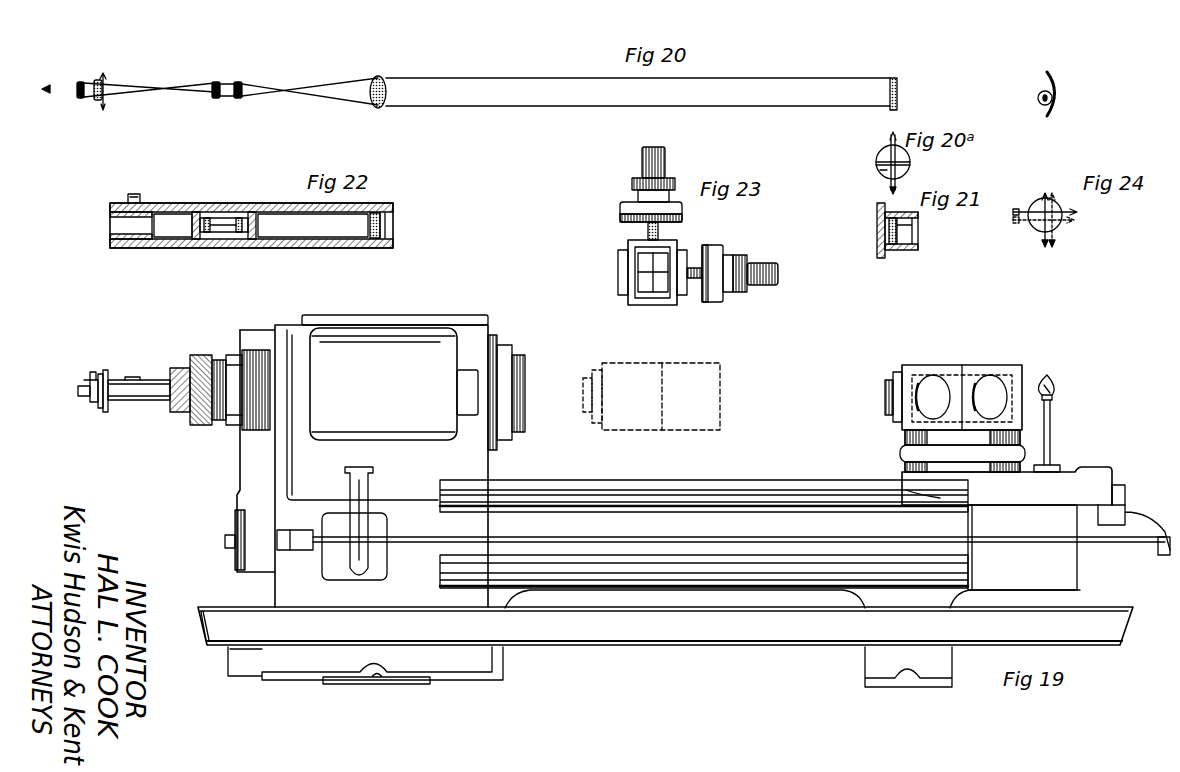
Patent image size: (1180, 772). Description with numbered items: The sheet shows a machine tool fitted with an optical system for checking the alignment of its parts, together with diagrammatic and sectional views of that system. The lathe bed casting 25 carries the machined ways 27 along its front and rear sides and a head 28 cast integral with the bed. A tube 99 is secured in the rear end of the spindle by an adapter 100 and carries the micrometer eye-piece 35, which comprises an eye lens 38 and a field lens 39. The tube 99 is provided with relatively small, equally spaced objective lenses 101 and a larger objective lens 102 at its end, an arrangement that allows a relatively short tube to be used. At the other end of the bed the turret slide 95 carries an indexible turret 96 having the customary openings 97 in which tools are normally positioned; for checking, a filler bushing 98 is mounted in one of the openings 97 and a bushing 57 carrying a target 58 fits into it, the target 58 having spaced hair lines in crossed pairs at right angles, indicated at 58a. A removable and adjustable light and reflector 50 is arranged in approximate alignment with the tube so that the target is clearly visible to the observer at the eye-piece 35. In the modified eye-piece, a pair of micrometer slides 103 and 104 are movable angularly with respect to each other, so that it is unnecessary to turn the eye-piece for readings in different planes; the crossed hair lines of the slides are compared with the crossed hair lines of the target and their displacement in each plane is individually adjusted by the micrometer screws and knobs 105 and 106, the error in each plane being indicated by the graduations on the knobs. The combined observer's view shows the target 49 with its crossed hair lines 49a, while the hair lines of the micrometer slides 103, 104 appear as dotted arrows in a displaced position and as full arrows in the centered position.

In FIG. 19, the bed casting 25 is at (665, 602).
In FIG. 19, the ways 27 is at (732, 482).
In FIG. 19, the head 28 is at (292, 330).
In FIG. 19, the micrometer eye-piece 35 is at (96, 400).
In FIG. 20, the eye lens 38 is at (80, 82).
In FIG. 20, the field lens 39 is at (98, 80).
In FIG. 24, the target 49 is at (1040, 232).
In FIG. 24, the crossed hair lines 49a is at (1040, 200).
In FIG. 20, the light and reflector 50 is at (1040, 92).
In FIG. 19, the light and reflector 50 is at (1051, 440).
In FIG. 21, the bushing 57 is at (905, 252).
In FIG. 19, the bushing 57 is at (586, 378).
In FIG. 20, the target 58 is at (894, 78).
In FIG. 20A, the target 58 is at (880, 170).
In FIG. 21, the target 58 is at (880, 228).
In FIG. 20A, the crossed hair lines 58a is at (880, 152).
In FIG. 19, the turret slide 95 is at (1092, 467).
In FIG. 19, the indexible turret 96 is at (678, 363).
In FIG. 19, the openings 97 is at (993, 378).
In FIG. 19, the filler bushing 98 is at (898, 372).
In FIG. 22, the tube 99 is at (272, 249).
In FIG. 19, the tube 99 is at (148, 380).
In FIG. 19, the adapter 100 is at (204, 358).
In FIG. 20, the objective lenses 101 is at (216, 80).
In FIG. 22, the objective lenses 101 is at (222, 215).
In FIG. 20, the objective lens 102 is at (382, 76).
In FIG. 22, the objective lens 102 is at (386, 225).
In FIG. 23, the micrometer slide 103 is at (675, 240).
In FIG. 23, the micrometer slide 104 is at (618, 283).
In FIG. 23, the micrometer screw and knob 105 is at (620, 210).
In FIG. 23, the micrometer screw and knob 106 is at (712, 302).